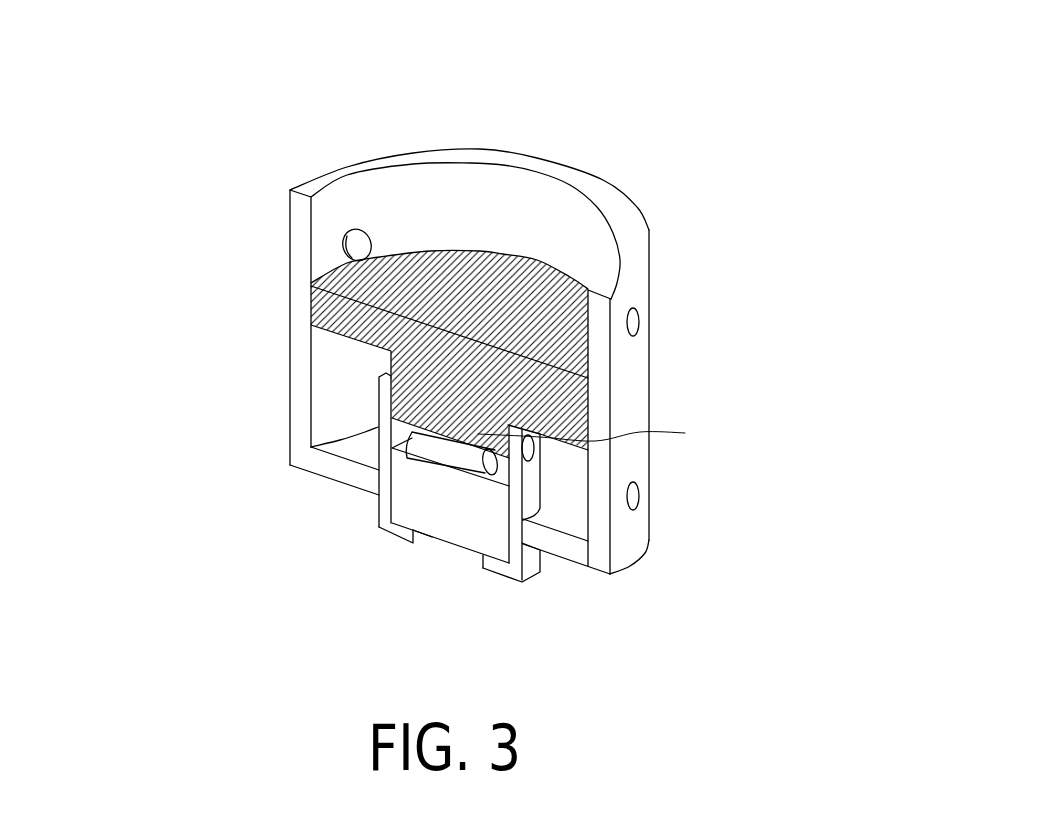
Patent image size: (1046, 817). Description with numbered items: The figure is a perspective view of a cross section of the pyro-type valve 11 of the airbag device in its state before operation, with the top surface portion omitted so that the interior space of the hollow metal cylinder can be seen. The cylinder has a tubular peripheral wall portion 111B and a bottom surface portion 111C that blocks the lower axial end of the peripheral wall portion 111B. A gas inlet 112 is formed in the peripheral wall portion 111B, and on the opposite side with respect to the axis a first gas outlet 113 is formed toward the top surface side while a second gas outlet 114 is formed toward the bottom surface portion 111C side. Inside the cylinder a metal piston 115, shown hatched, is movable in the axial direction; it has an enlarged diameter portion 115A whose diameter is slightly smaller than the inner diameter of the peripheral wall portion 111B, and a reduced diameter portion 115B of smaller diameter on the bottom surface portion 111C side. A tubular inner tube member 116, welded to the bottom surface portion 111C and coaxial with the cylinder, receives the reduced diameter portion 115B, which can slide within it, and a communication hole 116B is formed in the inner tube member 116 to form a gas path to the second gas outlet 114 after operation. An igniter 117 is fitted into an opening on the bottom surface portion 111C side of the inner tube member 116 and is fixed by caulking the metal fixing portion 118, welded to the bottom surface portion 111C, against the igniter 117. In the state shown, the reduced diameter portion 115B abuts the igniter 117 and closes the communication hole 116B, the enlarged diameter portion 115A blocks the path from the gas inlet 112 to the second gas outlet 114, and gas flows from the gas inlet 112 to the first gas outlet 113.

The pyro-type valve 11 is at (719, 99).
The peripheral wall portion 111B is at (650, 368).
The bottom surface portion 111C is at (567, 562).
The gas inlet 112 is at (343, 258).
The first gas outlet 113 is at (640, 323).
The second gas outlet 114 is at (640, 497).
The piston 115 is at (152, 287).
The enlarged diameter portion 115A is at (323, 313).
The reduced diameter portion 115B is at (418, 383).
The inner tube member 116 is at (353, 403).
The communication hole 116B is at (535, 448).
The igniter 117 is at (457, 510).
The metal fixing portion 118 is at (378, 512).